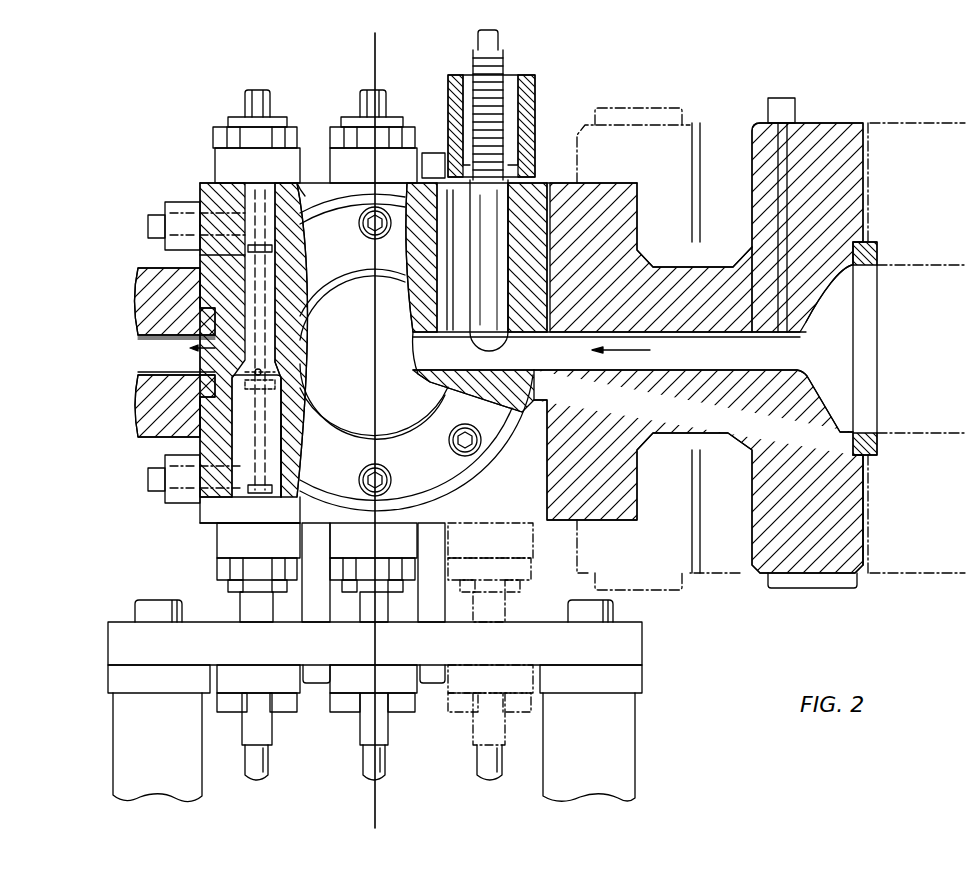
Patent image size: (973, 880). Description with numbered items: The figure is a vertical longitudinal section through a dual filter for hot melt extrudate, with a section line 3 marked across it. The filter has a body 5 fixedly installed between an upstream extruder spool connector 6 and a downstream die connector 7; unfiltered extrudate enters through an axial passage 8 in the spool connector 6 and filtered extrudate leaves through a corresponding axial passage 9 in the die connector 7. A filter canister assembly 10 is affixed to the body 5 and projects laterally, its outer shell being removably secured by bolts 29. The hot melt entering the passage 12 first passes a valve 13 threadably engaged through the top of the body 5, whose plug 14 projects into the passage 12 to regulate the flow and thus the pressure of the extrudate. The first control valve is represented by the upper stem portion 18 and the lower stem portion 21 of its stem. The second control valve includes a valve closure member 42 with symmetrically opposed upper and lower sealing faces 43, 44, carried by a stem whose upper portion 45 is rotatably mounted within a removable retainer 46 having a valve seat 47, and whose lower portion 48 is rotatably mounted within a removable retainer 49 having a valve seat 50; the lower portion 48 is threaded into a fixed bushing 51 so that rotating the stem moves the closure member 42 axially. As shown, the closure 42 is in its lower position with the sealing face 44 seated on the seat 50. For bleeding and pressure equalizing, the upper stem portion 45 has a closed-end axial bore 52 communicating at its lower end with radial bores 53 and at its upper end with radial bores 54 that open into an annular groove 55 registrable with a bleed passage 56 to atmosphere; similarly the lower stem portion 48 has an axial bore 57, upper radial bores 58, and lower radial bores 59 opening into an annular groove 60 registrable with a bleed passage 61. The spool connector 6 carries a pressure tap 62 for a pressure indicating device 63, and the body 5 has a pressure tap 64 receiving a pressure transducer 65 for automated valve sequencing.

The section line 3- 3 is at (375, 33).
The body 5 is at (207, 178).
The upstream extruder spool connector 6 is at (622, 522).
The downstream die connector 7 is at (140, 412).
The axial passage 8 is at (753, 360).
The axial passage 9 is at (148, 358).
The filter canister assembly 10 is at (488, 480).
The passage 12 is at (432, 372).
The valve 13 is at (503, 60).
The plug 14 is at (488, 340).
The upper stem portion 18 is at (385, 115).
The lower stem portion 21 is at (365, 608).
The bolts 29 is at (387, 224).
The valve closure member 42 is at (240, 346).
The upper sealing face 43 is at (225, 372).
The lower sealing face 44 is at (215, 398).
The upper stem portion 45 is at (250, 117).
The removable retainer 46 is at (225, 195).
The valve seat 47 is at (287, 335).
The lower stem portion 48 is at (288, 408).
The removable retainer 49 is at (290, 446).
The valve seat 50 is at (290, 364).
The fixed bushing 51 is at (258, 685).
The axial bore 52 is at (300, 200).
The radial bores 53 is at (300, 345).
The radial bores 54 is at (272, 250).
The annular groove 55 is at (242, 256).
The bleed passage 56 is at (215, 210).
The axial bore 57 is at (200, 458).
The upper radial bores 58 is at (300, 386).
The lower radial bores 59 is at (248, 506).
The annular groove 60 is at (280, 505).
The bleed passage 61 is at (210, 508).
The pressure tap 62 is at (778, 170).
The pressure indicating device 63 is at (783, 102).
The pressure tap 64 is at (445, 274).
The pressure transducer 65 is at (432, 155).